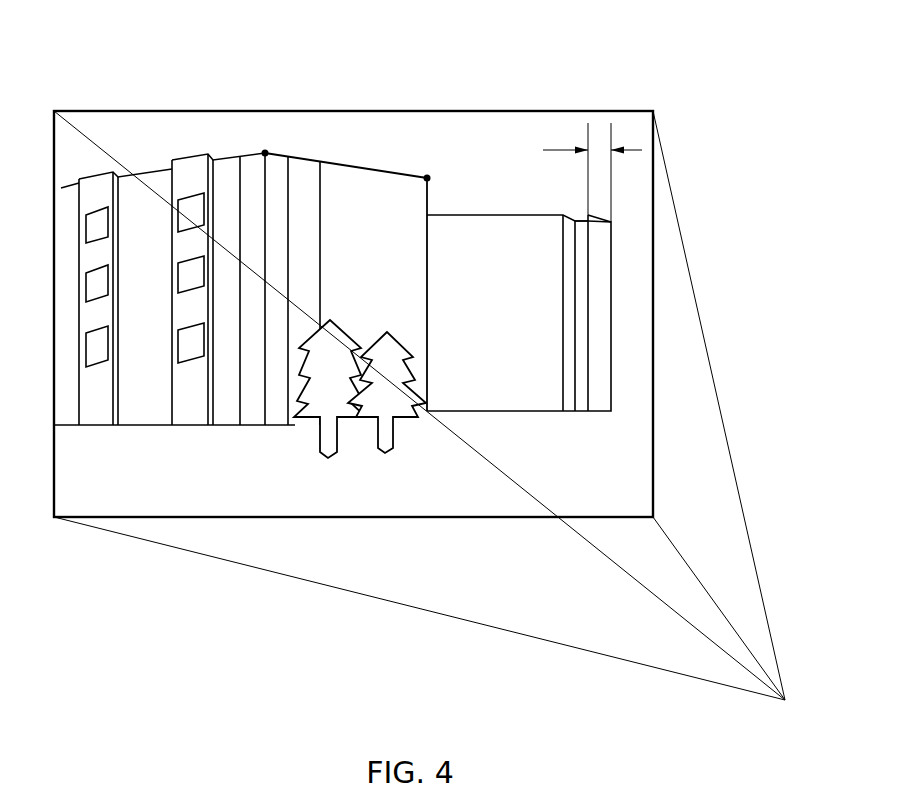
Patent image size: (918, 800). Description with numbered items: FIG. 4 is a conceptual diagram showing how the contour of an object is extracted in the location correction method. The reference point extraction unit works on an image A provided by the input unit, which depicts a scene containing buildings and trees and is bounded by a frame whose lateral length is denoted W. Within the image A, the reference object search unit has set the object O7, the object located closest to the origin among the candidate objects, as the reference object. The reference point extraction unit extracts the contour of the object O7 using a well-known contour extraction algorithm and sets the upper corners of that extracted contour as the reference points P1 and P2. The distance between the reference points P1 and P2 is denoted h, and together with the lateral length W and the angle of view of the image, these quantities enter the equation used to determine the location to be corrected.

The image A is at (500, 111).
The reference point P1 is at (265, 153).
The reference point P2 is at (428, 177).
The object O7 is at (405, 223).
The distance between the reference points h is at (427, 133).
The lateral length of the image W is at (54, 495).